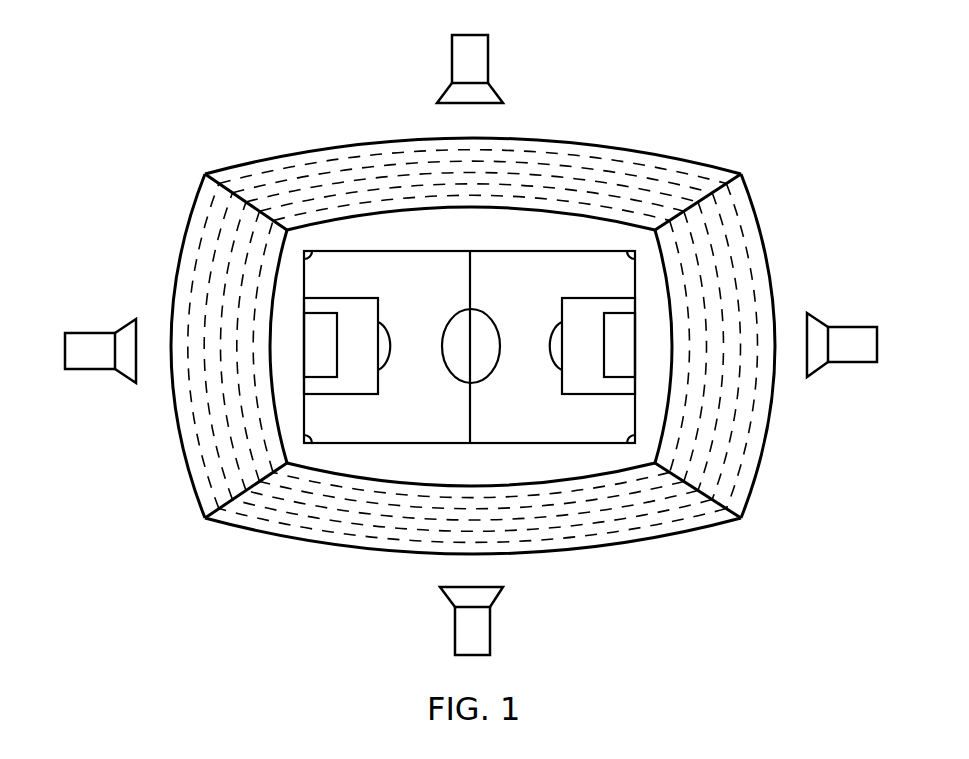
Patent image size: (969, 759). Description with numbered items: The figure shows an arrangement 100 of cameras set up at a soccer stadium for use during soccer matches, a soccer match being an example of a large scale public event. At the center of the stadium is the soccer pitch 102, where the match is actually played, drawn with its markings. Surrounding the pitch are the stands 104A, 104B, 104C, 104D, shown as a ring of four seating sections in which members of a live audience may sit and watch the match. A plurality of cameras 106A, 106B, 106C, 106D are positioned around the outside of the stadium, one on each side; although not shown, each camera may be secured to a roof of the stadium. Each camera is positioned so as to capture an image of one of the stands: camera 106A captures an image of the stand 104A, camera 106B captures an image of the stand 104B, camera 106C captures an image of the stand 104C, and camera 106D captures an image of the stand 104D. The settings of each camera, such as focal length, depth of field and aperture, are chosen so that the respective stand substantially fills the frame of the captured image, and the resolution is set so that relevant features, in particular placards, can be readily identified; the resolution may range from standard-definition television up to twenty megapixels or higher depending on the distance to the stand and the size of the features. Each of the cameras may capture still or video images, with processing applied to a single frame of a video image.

The arrangement 100 is at (745, 103).
The soccer pitch 102 is at (448, 292).
The stand 104A is at (740, 453).
The stand 104B is at (280, 523).
The stand 104C is at (196, 423).
The stand 104D is at (295, 170).
The camera 106A is at (93, 350).
The camera 106B is at (470, 60).
The camera 106C is at (850, 343).
The camera 106D is at (470, 632).